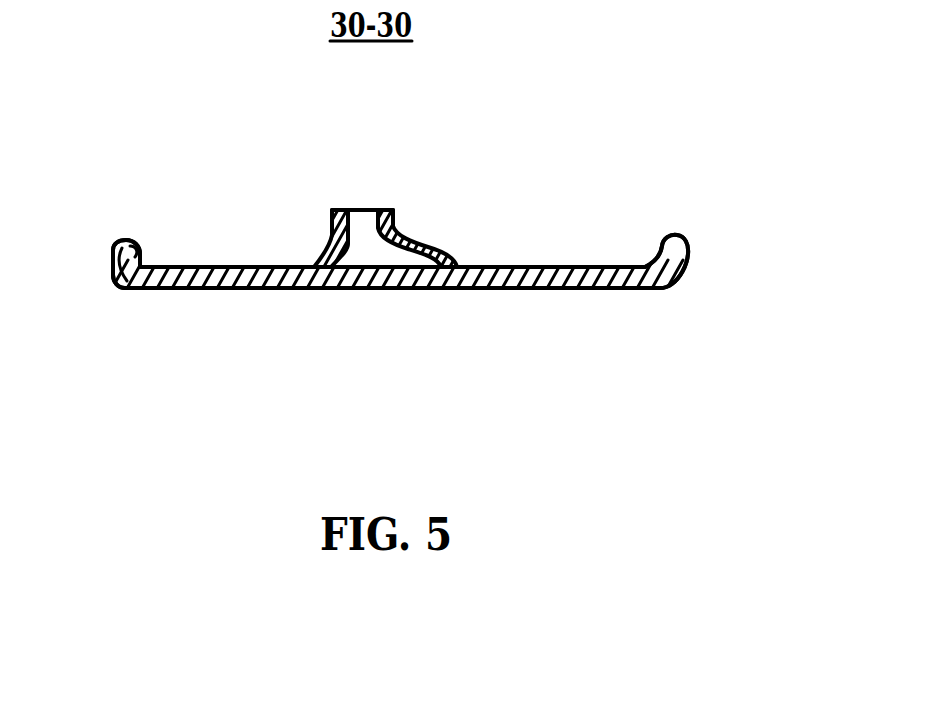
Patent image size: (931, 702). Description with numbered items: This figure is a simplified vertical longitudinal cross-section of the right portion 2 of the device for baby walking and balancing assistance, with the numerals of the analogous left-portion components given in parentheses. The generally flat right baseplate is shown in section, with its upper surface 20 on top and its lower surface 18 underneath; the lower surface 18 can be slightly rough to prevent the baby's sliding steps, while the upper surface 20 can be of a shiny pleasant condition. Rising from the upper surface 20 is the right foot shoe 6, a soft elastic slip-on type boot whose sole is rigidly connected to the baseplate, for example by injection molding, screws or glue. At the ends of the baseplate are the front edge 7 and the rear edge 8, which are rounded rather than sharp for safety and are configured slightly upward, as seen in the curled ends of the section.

The right portion 2 is at (588, 145).
The right foot shoe 6 is at (363, 210).
The front edge of the right baseplate 7 is at (675, 238).
The rear edge of the right baseplate 8 is at (124, 240).
The lower surface of the right baseplate 18 is at (408, 291).
The upper surface of the right baseplate 20 is at (195, 267).